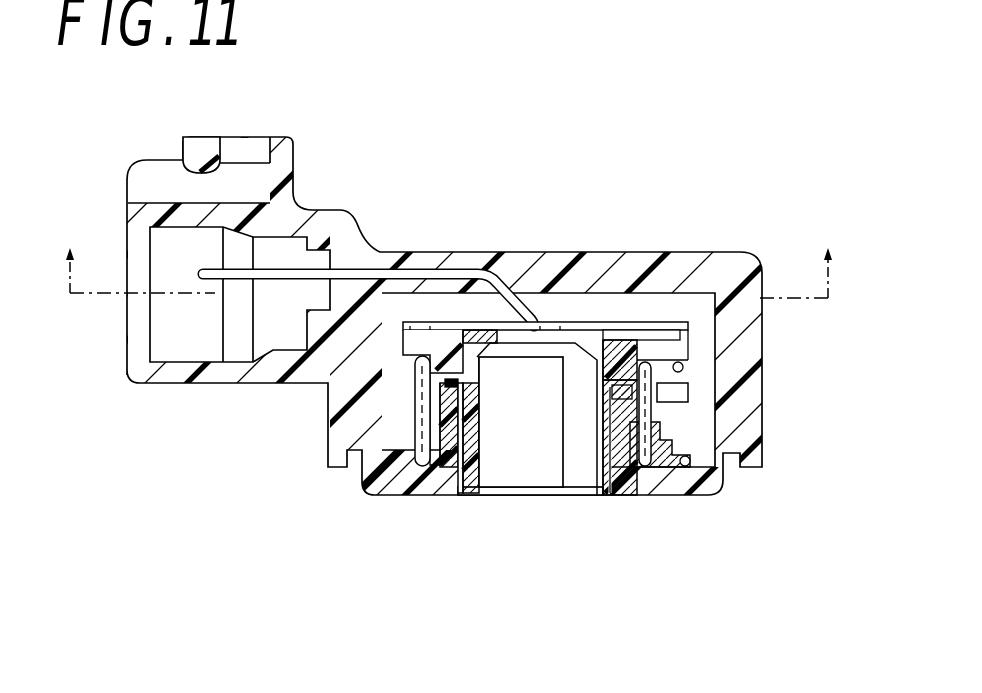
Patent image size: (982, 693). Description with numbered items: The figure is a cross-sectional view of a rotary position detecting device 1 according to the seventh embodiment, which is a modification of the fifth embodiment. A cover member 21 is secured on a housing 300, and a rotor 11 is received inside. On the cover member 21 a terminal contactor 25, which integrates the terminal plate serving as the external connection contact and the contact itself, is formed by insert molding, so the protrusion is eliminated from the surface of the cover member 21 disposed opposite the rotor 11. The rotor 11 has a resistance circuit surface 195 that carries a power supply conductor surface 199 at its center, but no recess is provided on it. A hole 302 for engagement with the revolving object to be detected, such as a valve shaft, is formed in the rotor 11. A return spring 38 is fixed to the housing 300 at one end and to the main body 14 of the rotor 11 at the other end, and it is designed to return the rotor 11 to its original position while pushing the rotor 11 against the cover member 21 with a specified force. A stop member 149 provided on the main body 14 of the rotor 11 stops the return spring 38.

The pressure sensor assembly 1 is at (515, 148).
The cover member 21 is at (692, 246).
The terminal contactor 25 is at (420, 266).
The main body 14 is at (687, 347).
The power supply conductor surface 199 is at (550, 318).
The resistance circuit surface 195 is at (576, 324).
The stop member 149 is at (677, 396).
The return spring 38 is at (415, 434).
The rotor 11 is at (487, 462).
The hole 302 is at (541, 465).
The housing 300 is at (648, 508).